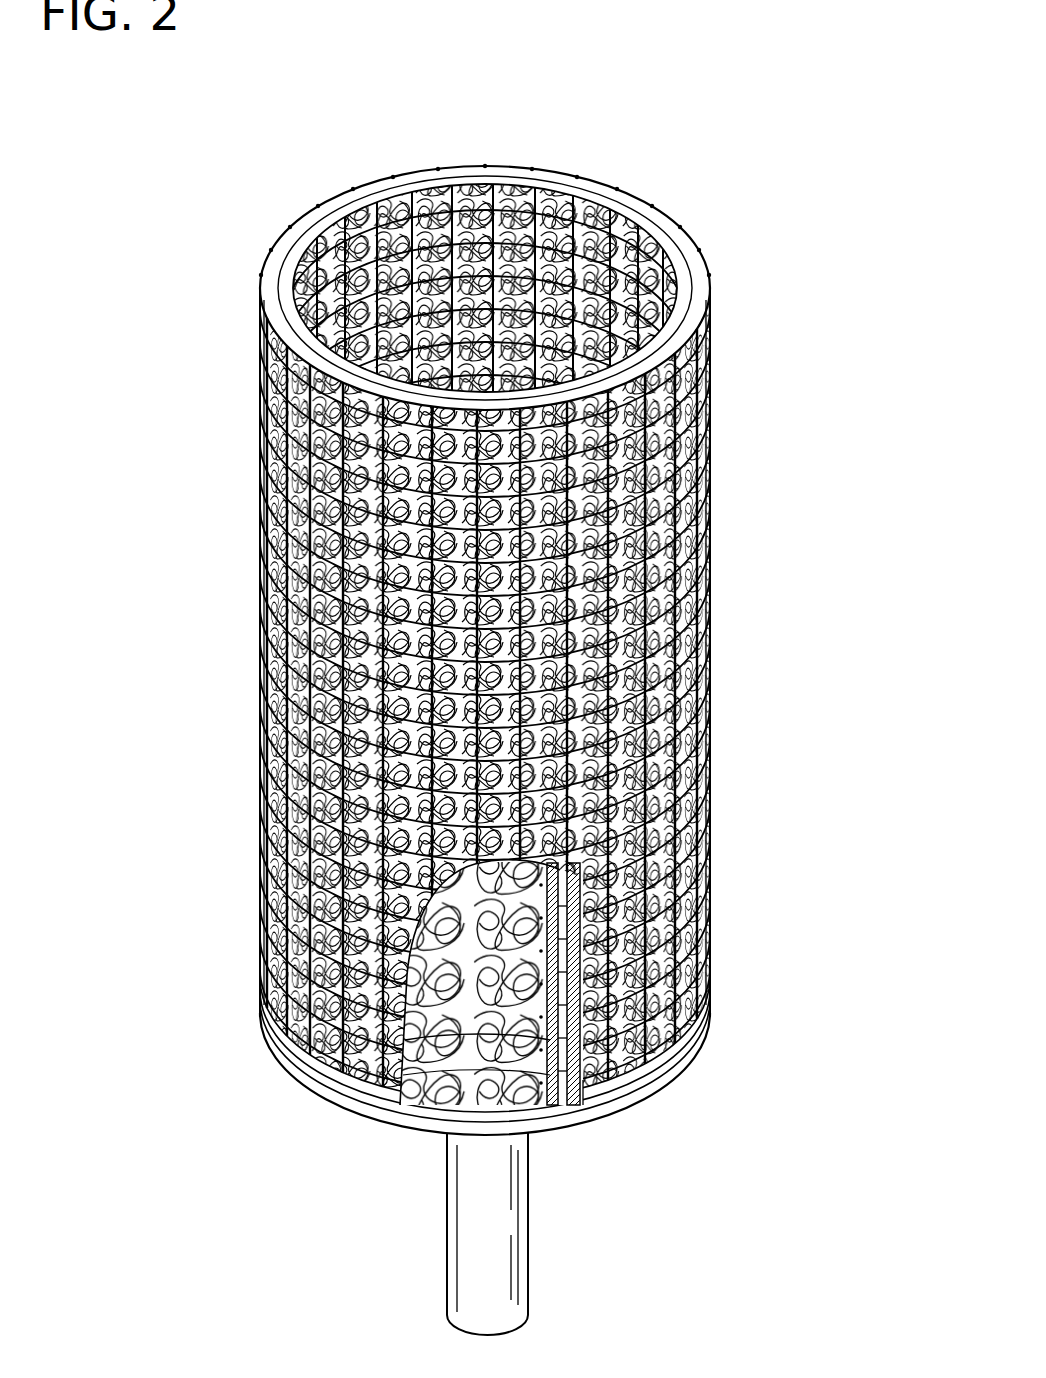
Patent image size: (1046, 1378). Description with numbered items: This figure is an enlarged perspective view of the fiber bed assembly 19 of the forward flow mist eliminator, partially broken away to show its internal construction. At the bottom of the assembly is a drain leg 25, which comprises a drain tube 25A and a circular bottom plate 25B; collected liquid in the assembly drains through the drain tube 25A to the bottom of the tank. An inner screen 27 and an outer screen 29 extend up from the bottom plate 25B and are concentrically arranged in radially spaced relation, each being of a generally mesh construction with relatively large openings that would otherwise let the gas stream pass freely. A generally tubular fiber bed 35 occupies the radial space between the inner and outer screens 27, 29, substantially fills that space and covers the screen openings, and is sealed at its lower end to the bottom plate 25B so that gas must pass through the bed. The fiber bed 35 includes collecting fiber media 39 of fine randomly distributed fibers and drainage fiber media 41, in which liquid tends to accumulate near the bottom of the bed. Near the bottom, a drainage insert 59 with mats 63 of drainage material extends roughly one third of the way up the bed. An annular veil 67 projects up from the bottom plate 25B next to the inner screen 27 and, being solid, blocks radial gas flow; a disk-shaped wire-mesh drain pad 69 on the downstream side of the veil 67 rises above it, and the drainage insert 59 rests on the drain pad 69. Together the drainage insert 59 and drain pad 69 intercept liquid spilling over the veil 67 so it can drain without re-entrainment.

The fiber bed assembly 19 is at (805, 176).
The drain leg 25 is at (532, 1264).
The drain tube 25A is at (476, 1262).
The circular bottom plate 25B is at (402, 1120).
The inner screen 27 is at (462, 182).
The outer screen 29 is at (255, 448).
The fiber bed 35 is at (658, 214).
The collecting fiber media 39 is at (600, 1106).
The drainage fiber media 41 is at (582, 1022).
The drainage insert 59 is at (535, 966).
The mats of drainage material 63 is at (570, 1012).
The annular veil 67 is at (600, 1102).
The drain pad 69 is at (447, 1077).